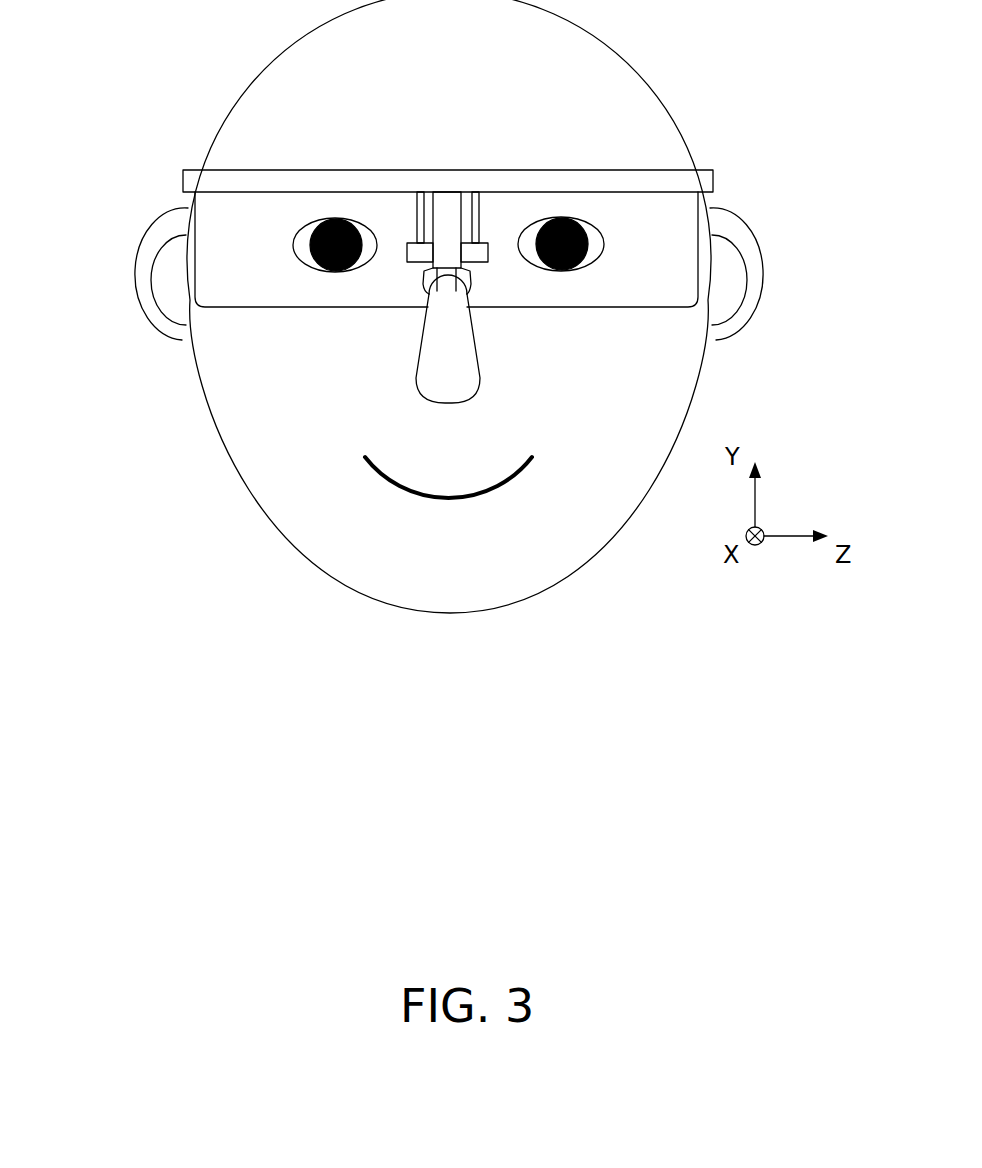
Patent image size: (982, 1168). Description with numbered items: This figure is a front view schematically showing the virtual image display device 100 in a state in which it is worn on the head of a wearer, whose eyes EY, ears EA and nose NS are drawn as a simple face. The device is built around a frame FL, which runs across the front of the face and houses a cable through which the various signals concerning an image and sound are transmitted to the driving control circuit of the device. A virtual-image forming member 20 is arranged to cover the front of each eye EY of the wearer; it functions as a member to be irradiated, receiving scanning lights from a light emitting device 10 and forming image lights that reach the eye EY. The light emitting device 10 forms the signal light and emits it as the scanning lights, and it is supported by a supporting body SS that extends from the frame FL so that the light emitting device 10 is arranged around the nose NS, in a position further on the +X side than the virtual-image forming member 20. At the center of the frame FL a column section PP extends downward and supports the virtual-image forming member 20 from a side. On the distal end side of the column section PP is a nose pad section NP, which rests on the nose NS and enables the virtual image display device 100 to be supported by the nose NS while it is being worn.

The virtual image display device 100 is at (402, 188).
The frame FL is at (362, 178).
The virtual-image forming member 20 is at (328, 212).
The supporting body SS is at (420, 224).
The column section PP is at (443, 218).
The light emitting device 10 is at (413, 258).
The eye EY is at (306, 238).
The ear EA is at (168, 218).
The nose NS is at (438, 355).
The nose pad section NP is at (447, 267).